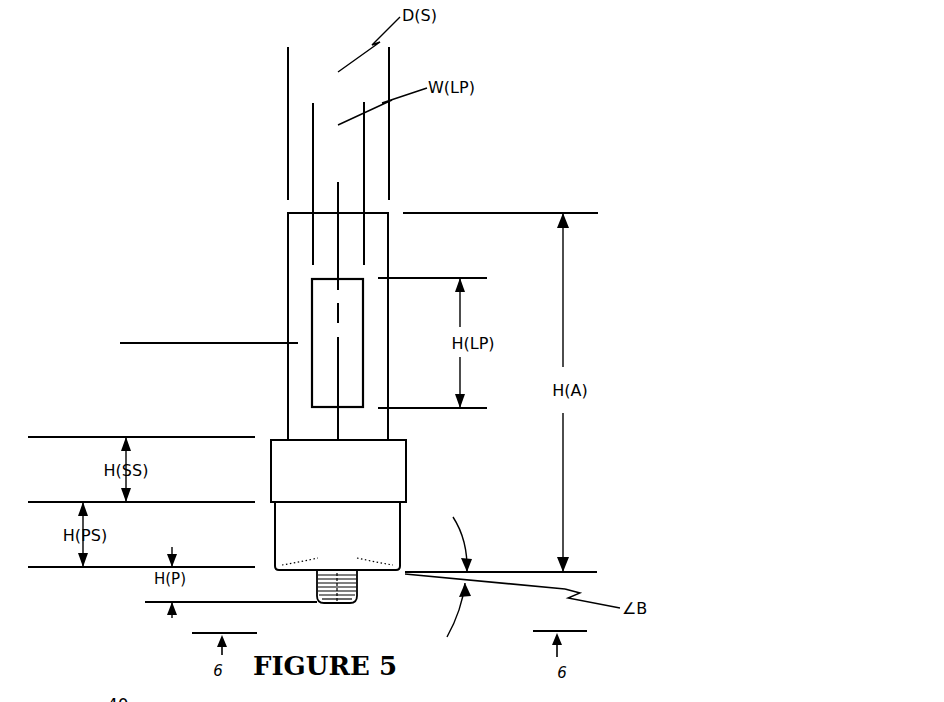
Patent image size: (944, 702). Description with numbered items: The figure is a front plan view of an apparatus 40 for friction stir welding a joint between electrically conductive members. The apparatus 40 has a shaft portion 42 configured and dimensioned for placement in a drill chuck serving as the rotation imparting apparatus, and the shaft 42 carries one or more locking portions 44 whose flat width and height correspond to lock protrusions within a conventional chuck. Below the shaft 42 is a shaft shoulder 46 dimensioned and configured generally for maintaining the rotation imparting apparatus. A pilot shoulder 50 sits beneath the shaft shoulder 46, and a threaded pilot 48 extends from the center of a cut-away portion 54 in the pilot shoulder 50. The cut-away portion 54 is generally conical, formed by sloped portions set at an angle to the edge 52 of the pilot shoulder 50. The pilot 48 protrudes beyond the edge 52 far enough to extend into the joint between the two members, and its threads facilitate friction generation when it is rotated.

The apparatus 40 is at (250, 190).
The shaft portion 42 is at (292, 292).
The locking portion 44 is at (333, 317).
The shaft shoulder 46 is at (283, 472).
The pilot 48 is at (317, 583).
The pilot shoulder 50 is at (380, 532).
The edge 52 is at (377, 574).
The cut-away portion 54 is at (367, 574).